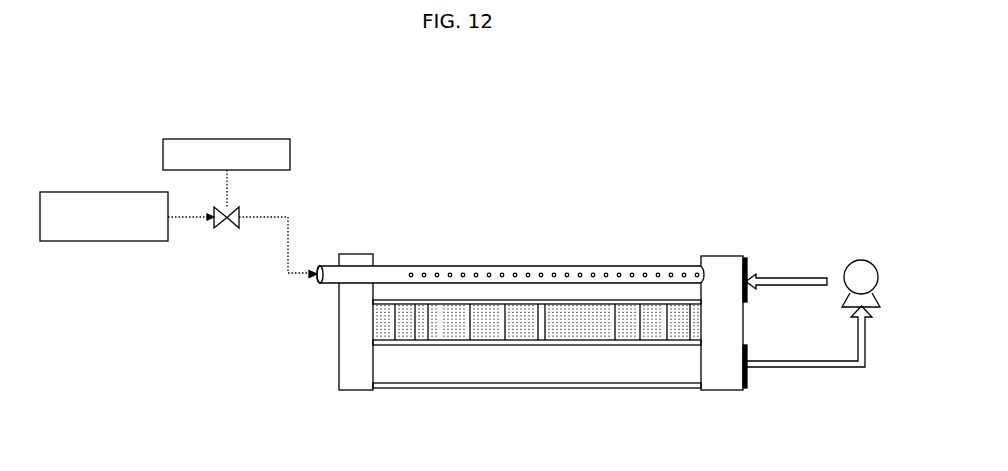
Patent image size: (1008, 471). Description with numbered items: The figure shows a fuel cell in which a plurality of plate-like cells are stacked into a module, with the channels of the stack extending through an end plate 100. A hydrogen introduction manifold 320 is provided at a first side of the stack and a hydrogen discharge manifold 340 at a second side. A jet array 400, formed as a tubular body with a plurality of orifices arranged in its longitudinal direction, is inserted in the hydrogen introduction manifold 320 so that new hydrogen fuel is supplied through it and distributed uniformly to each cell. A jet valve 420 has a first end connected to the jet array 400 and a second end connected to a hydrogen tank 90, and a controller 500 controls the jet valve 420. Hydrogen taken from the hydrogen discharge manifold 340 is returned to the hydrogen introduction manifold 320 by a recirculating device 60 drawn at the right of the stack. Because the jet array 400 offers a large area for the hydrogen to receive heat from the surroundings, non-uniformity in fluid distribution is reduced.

The hydrogen tank 90 is at (107, 191).
The controller 500 is at (228, 138).
The jet valve 420 is at (212, 221).
The hydrogen introduction manifold 320 is at (472, 265).
The jet array 400 is at (673, 272).
The pump 60 is at (863, 258).
The end plate 100 is at (356, 368).
The hydrogen discharge manifold 340 is at (566, 368).